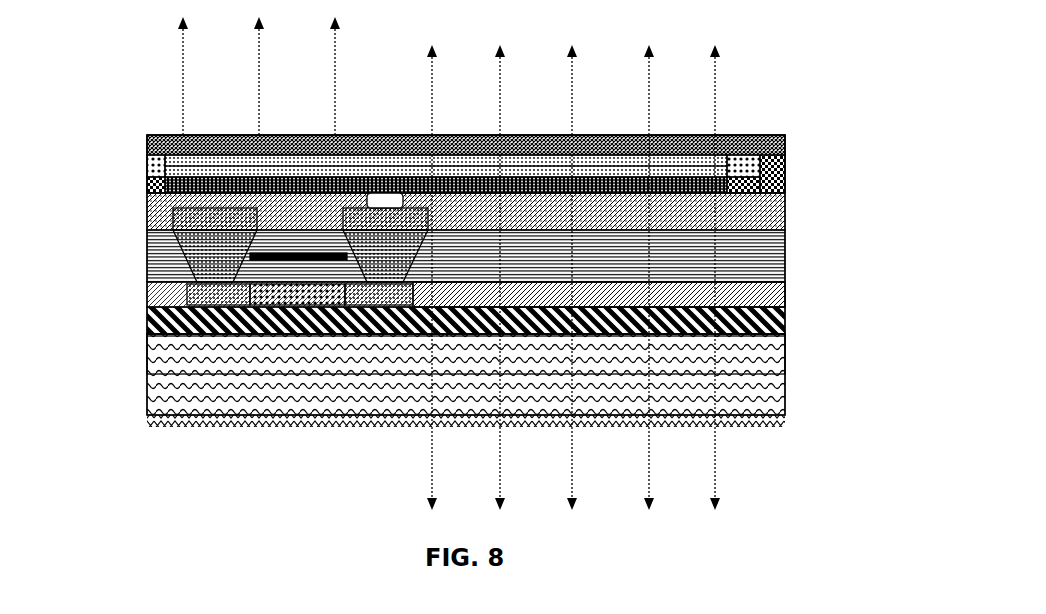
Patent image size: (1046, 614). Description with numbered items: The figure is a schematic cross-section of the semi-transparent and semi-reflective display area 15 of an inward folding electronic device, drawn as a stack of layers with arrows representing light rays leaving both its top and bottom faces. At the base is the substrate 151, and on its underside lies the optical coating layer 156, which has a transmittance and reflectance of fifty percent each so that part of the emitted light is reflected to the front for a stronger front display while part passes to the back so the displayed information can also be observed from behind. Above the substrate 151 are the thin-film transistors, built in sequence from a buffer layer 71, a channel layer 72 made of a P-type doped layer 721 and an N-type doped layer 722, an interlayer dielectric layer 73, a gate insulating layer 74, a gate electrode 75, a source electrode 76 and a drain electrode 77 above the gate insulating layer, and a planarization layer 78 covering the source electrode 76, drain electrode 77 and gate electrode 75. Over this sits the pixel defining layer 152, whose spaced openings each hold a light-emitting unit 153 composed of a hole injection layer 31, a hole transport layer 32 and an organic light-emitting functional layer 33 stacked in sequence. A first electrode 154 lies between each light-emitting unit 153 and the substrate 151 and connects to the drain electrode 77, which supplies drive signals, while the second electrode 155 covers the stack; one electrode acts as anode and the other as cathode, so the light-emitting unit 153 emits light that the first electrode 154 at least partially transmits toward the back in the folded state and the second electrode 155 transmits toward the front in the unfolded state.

The semi-transparent and semi-reflective display area 15 is at (152, 101).
The second electrode 155 is at (273, 135).
The light-emitting unit 153 is at (882, 80).
The organic light-emitting functional layer 33 is at (720, 137).
The hole transport layer 32 is at (785, 147).
The hole injection layer 31 is at (785, 158).
The first electrode 154 is at (785, 168).
The pixel defining layer 152 is at (785, 167).
The planarization layer 78 is at (785, 200).
The source electrode 76 is at (147, 225).
The gate insulating layer 74 is at (785, 252).
The channel layer 72 is at (55, 345).
The P-type doped layer 721 is at (147, 280).
The interlayer dielectric layer 73 is at (785, 298).
The N-type doped layer 722 is at (147, 348).
The buffer layer 71 is at (785, 320).
The substrate 151 is at (785, 375).
The gate electrode 75 is at (387, 353).
The drain electrode 77 is at (497, 353).
The optical coating layer 156 is at (785, 420).